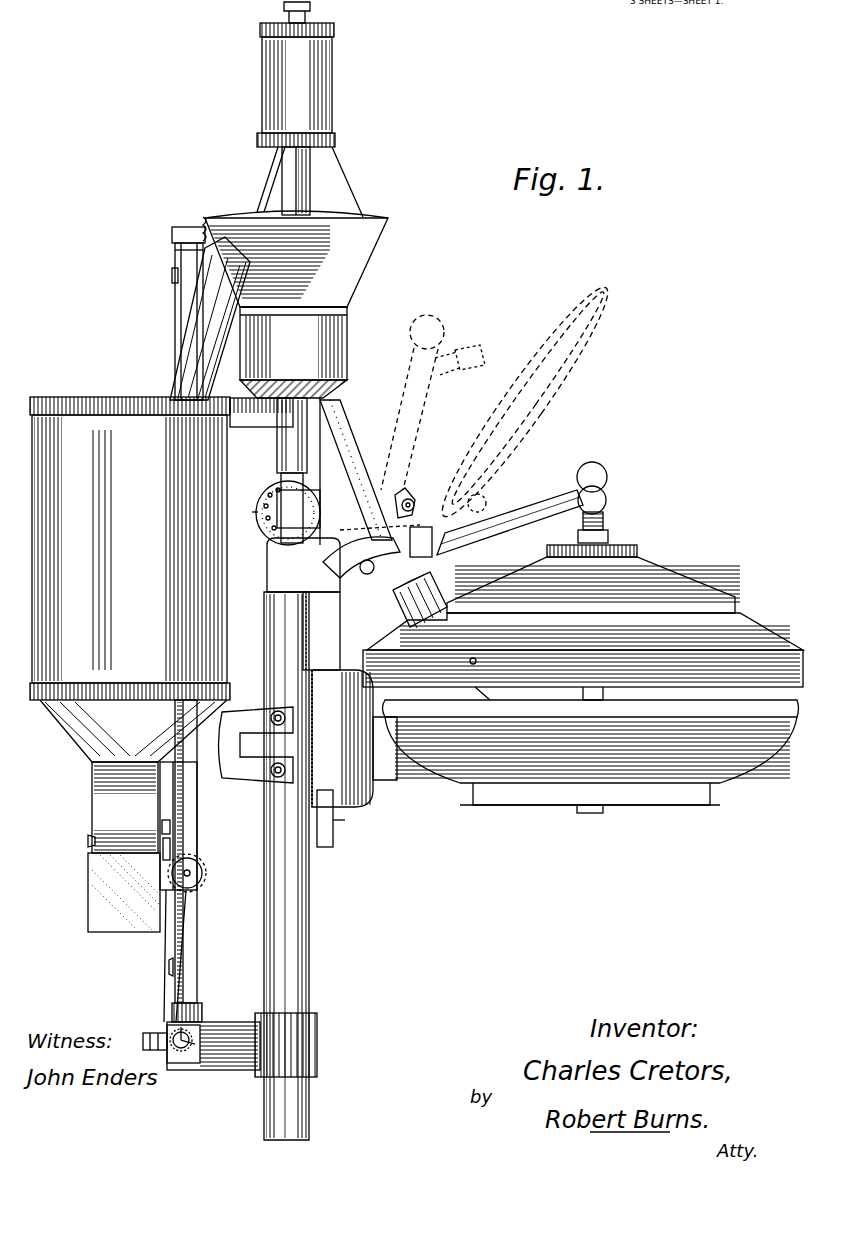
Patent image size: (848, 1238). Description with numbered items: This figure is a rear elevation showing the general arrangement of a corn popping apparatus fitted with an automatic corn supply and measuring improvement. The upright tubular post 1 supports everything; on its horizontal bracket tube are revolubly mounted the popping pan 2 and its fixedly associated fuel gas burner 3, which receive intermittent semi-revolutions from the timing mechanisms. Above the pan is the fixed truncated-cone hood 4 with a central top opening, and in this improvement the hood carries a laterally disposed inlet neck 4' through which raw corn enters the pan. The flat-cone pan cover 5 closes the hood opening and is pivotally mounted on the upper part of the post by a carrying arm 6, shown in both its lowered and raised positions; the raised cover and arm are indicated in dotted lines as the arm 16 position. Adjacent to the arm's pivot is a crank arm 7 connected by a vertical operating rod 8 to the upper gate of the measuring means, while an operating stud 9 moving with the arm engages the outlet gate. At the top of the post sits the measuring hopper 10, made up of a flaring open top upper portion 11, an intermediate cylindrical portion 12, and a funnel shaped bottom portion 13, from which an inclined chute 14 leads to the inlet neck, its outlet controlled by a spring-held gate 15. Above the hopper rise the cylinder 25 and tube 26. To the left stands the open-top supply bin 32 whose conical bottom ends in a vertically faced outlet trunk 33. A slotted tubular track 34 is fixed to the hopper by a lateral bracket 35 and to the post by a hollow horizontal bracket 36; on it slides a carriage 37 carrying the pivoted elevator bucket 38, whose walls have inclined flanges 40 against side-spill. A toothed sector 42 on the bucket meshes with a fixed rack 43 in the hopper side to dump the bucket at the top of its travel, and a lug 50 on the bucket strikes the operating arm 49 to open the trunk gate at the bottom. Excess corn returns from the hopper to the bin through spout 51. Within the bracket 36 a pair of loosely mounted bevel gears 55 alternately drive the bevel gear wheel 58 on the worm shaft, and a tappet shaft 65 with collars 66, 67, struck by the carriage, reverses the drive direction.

The upright tubular post 1 is at (305, 936).
The popping pan 2 is at (583, 675).
The fuel gas burner 3 is at (586, 756).
The hood 4 is at (585, 631).
The inlet neck 4' is at (421, 600).
The pan cover 5 is at (520, 440).
The carrying arm 6 is at (510, 520).
The crank arm 7 is at (335, 508).
The vertical operating rod 8 is at (318, 420).
The operating stud 9 is at (371, 551).
The casing or hopper 10 is at (355, 302).
The flaring open top upper portion 11 is at (296, 259).
The intermediate cylindrical portion 12 is at (293, 343).
The funnel shaped bottom portion 13 is at (293, 390).
The inclined chute 14 is at (325, 460).
The controlling gate or valve 15 is at (420, 505).
The handle (raised position) 16 is at (433, 413).
The upper cylinder 25 is at (322, 95).
The tube 26 is at (302, 181).
The supply bin 32 is at (161, 579).
The outlet trunk 33 is at (125, 807).
The guideway or track 34 is at (205, 812).
The lateral bracket member 35 is at (172, 235).
The hollow horizontal bracket member 36 is at (213, 1046).
The head or carriage 37 is at (173, 910).
The elevator bucket 38 is at (124, 892).
The outwardly inclined plates or flanges 40 is at (88, 842).
The toothed sector 42 is at (202, 877).
The fixed vertical toothed rack 43 is at (205, 220).
The operating arm 49 is at (168, 844).
The lug or projection 50 is at (167, 828).
The tube or spout 51 is at (200, 332).
The pair of bevel gears 55 is at (167, 1052).
The bevel gear wheel 58 is at (202, 1023).
The tappet shaft 65 is at (172, 1010).
The tappet collar 66 is at (173, 277).
The tappet collar 67 is at (169, 985).